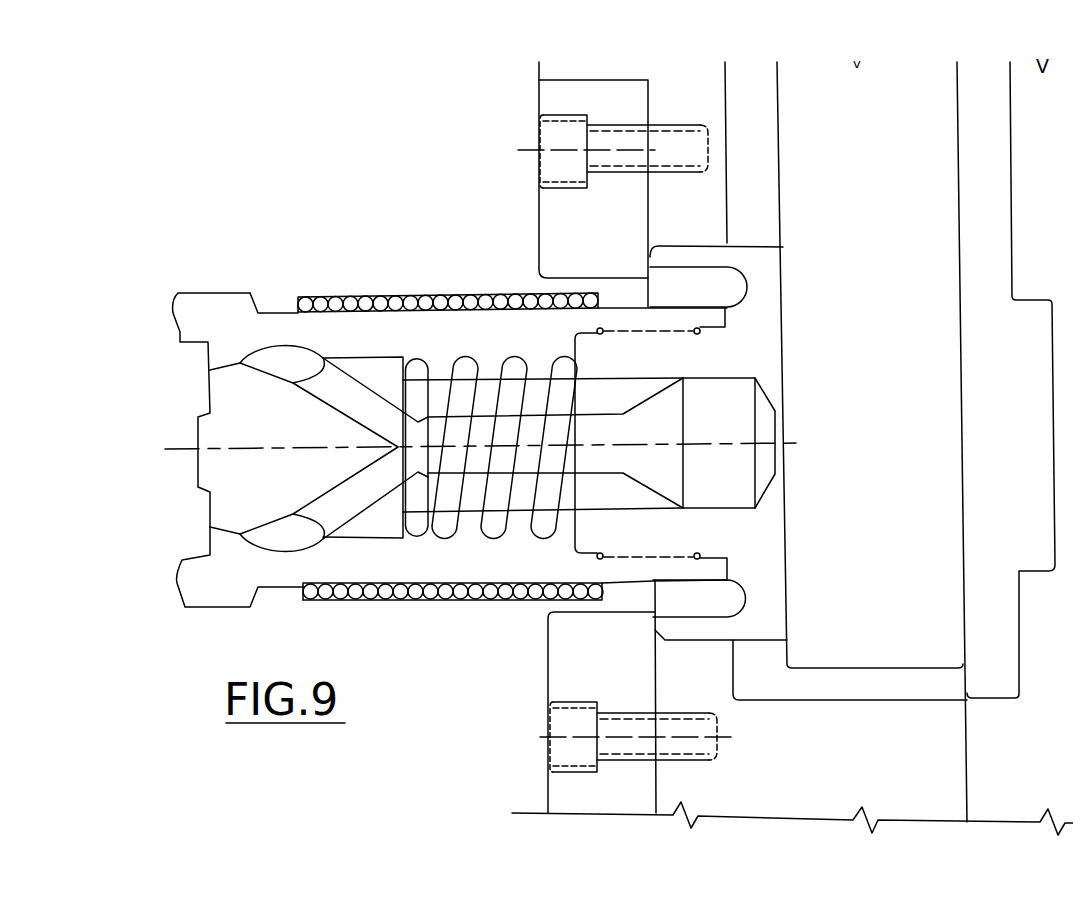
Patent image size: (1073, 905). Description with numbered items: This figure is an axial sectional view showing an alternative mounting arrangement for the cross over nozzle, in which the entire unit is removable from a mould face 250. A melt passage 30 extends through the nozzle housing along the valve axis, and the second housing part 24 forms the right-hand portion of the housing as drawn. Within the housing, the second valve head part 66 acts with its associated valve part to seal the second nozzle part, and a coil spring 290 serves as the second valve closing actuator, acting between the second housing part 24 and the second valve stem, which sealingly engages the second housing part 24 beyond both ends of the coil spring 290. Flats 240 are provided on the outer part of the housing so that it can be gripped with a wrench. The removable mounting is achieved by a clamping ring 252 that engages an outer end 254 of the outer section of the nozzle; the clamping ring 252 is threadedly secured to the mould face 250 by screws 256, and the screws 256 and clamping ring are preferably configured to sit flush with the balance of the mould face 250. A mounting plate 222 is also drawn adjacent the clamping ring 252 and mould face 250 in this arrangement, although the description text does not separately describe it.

The second housing part 24 is at (363, 205).
The flats 240 is at (223, 303).
The coil spring 290 is at (463, 360).
The second valve head part 66 is at (226, 478).
The melt passage 30 is at (642, 428).
The clamping ring 252 is at (547, 108).
The screws 256 is at (558, 170).
The outer end 254 is at (665, 628).
The mounting plate 222 is at (773, 625).
The mould face 250 is at (828, 776).